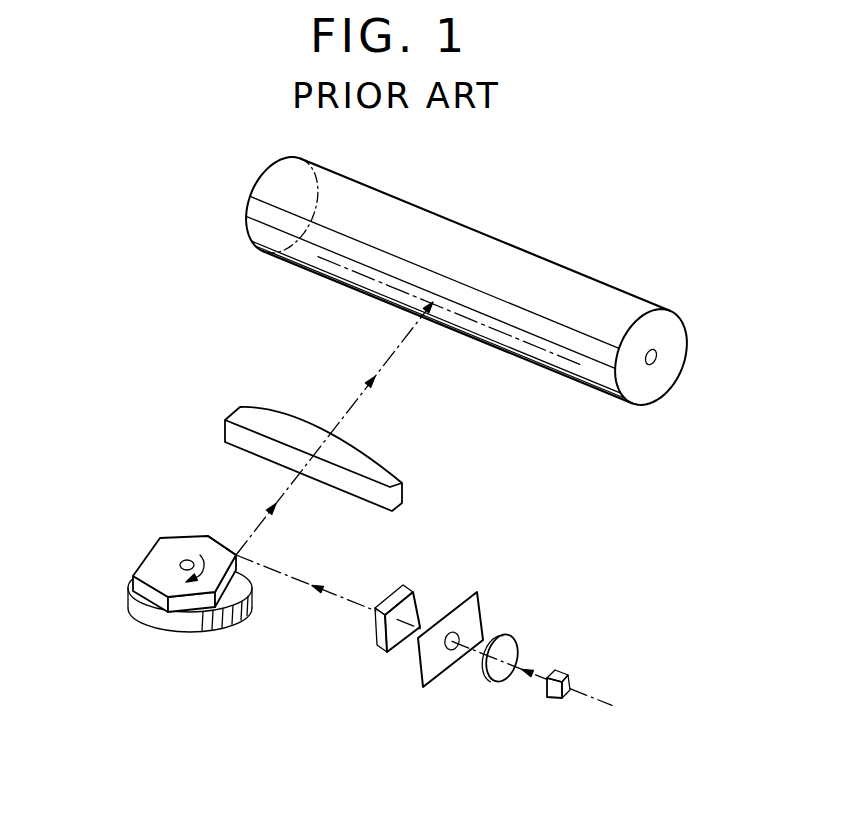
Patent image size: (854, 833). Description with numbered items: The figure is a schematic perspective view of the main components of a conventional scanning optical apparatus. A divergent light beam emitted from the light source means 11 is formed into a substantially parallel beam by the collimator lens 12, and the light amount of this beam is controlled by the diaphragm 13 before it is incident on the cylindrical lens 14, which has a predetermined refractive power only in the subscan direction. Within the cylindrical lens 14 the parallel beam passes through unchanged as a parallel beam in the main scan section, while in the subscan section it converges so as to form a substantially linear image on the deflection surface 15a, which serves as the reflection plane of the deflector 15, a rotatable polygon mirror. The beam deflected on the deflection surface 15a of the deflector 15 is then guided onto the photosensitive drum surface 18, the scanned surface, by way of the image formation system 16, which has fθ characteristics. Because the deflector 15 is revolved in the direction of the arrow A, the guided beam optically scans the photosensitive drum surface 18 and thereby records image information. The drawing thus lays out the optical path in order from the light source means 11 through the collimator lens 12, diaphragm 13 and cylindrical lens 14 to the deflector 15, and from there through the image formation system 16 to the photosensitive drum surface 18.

The light source means 11 is at (550, 697).
The collimator lens 12 is at (493, 682).
The diaphragm 13 is at (433, 662).
The cylindrical lens 14 is at (374, 636).
The deflector 15 is at (155, 555).
The deflection surface 15a is at (225, 542).
The arrow A is at (205, 576).
The image formation system 16 is at (290, 422).
The photosensitive drum surface 18 is at (572, 386).